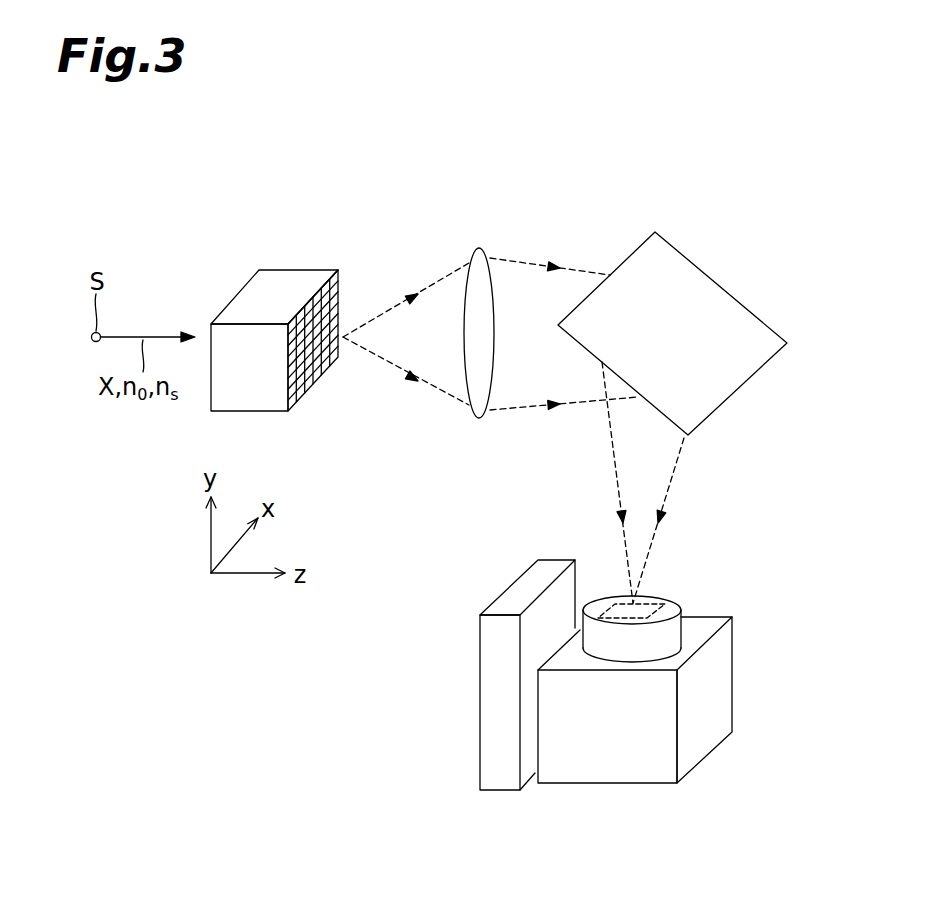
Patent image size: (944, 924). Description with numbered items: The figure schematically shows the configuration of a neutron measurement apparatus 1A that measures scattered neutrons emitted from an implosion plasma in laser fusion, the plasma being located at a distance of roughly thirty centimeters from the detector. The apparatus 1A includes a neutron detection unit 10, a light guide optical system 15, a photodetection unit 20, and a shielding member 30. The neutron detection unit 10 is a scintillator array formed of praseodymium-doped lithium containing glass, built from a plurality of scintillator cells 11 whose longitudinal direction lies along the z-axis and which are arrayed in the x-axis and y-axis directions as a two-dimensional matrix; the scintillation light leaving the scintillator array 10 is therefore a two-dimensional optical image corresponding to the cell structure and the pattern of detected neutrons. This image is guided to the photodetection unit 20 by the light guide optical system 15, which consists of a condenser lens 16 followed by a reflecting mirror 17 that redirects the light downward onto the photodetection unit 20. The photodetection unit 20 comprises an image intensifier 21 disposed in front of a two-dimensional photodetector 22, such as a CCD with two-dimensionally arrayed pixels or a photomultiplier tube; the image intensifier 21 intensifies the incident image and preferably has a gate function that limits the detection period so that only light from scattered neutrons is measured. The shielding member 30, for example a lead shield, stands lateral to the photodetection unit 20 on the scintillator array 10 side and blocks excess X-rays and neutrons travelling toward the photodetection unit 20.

The neutron measurement apparatus 1A is at (397, 175).
The neutron detection unit 10 is at (280, 280).
The scintillator cells 11 is at (340, 279).
The light guide optical system 15 is at (508, 160).
The condenser lens 16 is at (479, 250).
The reflecting mirror 17 is at (648, 257).
The photodetection unit 20 is at (800, 596).
The image intensifier 21 is at (680, 604).
The two-dimensional photodetector 22 is at (723, 657).
The shielding member 30 is at (542, 566).